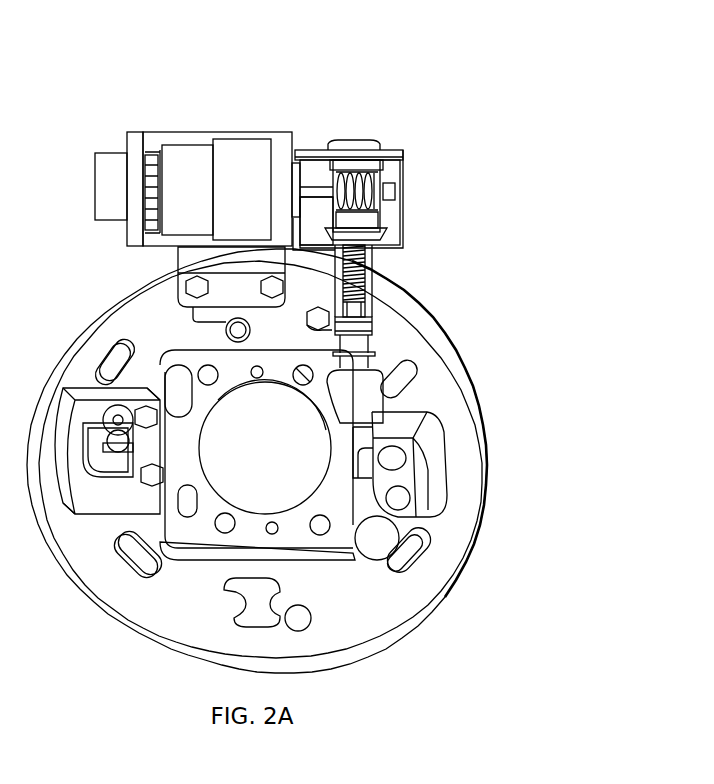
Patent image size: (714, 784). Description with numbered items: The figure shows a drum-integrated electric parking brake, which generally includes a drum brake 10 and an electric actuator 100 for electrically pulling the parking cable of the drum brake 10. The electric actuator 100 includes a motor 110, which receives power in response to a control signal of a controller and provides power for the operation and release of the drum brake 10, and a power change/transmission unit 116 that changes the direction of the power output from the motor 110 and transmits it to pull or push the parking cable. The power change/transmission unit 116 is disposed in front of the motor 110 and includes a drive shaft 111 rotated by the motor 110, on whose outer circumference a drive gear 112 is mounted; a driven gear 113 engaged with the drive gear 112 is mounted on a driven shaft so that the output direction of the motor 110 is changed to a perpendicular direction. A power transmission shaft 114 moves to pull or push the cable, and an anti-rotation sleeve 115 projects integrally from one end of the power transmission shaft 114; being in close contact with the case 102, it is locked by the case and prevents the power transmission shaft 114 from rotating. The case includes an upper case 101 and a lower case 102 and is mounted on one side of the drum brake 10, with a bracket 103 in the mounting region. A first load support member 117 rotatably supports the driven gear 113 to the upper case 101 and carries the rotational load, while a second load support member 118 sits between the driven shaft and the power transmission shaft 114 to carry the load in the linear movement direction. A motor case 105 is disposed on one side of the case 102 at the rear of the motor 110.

The drum brake 10 is at (497, 410).
The electric actuator 100 is at (233, 118).
The upper case 101 is at (380, 153).
The lower case 102 is at (138, 135).
The bracket 103 is at (190, 262).
The motor case 105 is at (106, 160).
The motor 110 is at (180, 155).
The drive shaft 111 is at (315, 186).
The drive gear 112 is at (350, 171).
The driven gear 113 is at (375, 220).
The power transmission shaft 114 is at (363, 278).
The anti-rotation sleeve 115 is at (443, 362).
The power change/transmission unit 116 is at (420, 131).
The first load support member 117 is at (396, 165).
The second load support member 118 is at (386, 248).